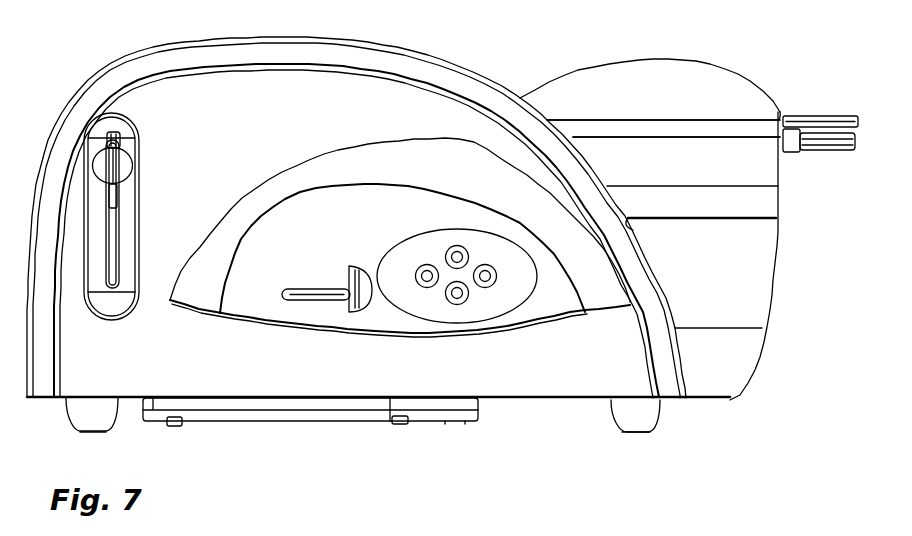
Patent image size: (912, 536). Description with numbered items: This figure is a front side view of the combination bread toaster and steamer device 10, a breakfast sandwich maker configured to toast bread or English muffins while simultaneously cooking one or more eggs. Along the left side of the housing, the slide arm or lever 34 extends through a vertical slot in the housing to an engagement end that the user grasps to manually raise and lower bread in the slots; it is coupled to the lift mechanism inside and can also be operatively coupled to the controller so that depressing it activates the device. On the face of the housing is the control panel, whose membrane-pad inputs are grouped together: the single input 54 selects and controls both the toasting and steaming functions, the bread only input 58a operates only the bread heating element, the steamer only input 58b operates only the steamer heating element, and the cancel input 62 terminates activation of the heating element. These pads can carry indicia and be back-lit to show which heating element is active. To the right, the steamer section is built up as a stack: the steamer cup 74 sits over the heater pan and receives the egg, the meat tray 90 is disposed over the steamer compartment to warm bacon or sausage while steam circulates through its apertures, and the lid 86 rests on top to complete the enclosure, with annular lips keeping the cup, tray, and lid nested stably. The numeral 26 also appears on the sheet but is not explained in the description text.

The combination bread toaster and steamer device 10 is at (300, 458).
The base 26 is at (710, 535).
The slide arm or lever 34 is at (100, 165).
The single input 54 is at (445, 257).
The bread only input 58a is at (425, 287).
The steamer only input 58b is at (495, 285).
The cancel input 62 is at (467, 299).
The steamer cup 74 is at (778, 168).
The lid 86 is at (689, 60).
The meat tray 90 is at (605, 120).